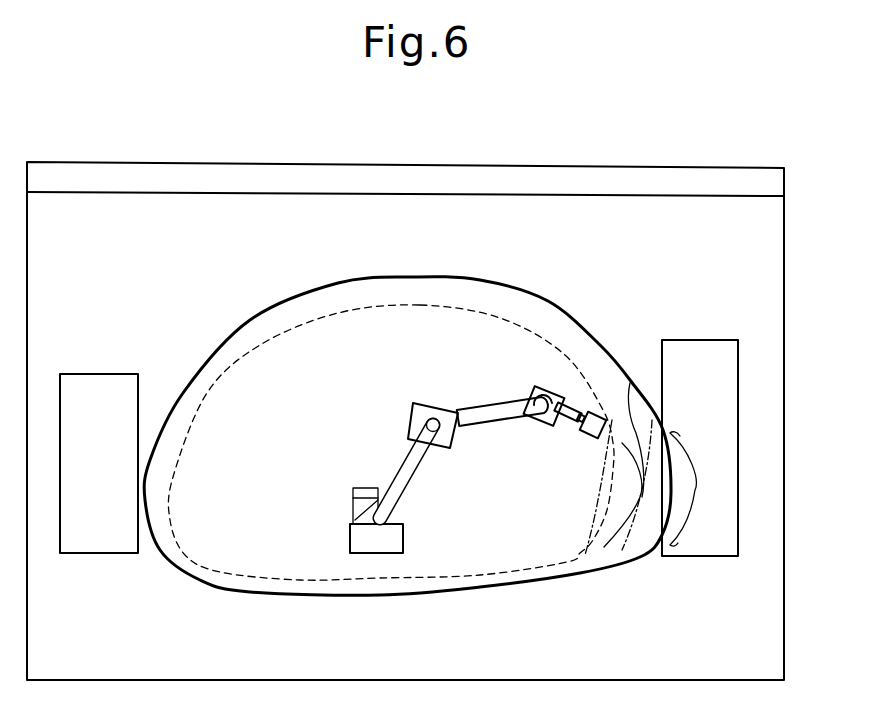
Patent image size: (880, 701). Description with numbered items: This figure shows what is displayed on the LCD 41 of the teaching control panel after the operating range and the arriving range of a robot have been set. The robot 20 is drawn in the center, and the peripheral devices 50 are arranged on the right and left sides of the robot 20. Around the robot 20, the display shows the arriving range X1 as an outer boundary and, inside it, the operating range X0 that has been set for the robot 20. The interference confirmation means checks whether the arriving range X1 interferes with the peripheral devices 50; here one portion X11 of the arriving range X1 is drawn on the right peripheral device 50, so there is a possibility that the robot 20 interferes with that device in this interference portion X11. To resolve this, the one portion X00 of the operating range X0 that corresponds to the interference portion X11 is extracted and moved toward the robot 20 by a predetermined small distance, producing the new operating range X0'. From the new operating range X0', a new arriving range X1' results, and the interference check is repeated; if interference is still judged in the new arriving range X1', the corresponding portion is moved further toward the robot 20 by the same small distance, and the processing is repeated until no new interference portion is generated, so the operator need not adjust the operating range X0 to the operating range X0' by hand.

The LCD 41 is at (738, 167).
The peripheral devices 50 is at (98, 553).
The robot 20 is at (440, 475).
The arriving range X1 is at (407, 424).
The operating range X0 is at (391, 442).
The one portion of the operating range X00 is at (630, 383).
The interference portion X11 is at (697, 490).
The new operating range X0' is at (581, 487).
The new arriving range X1' is at (640, 535).